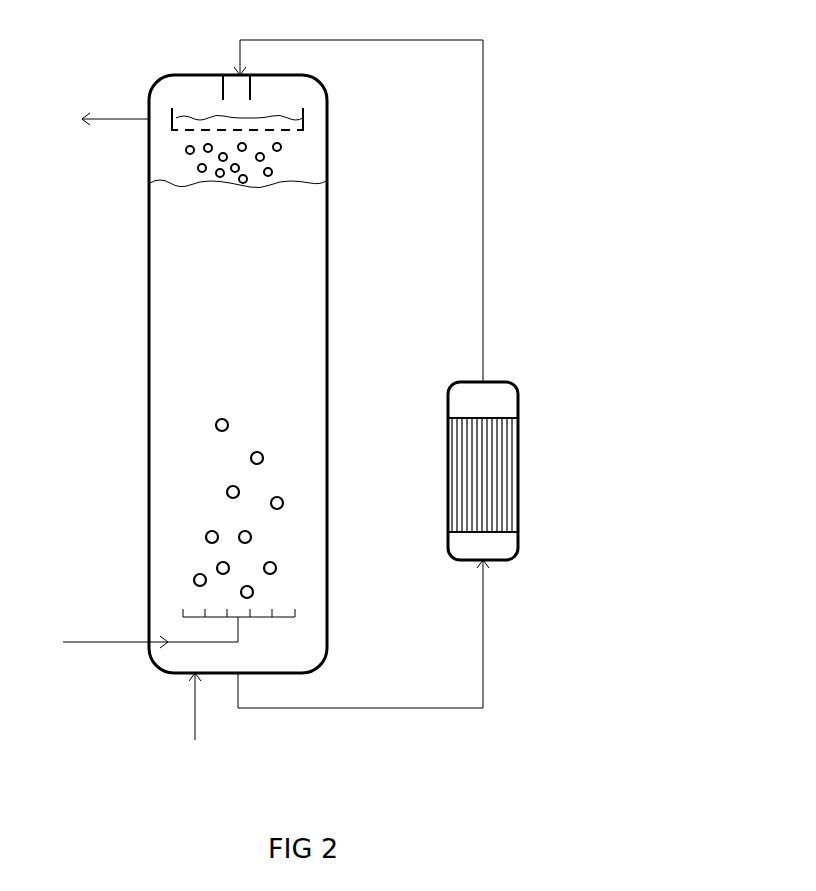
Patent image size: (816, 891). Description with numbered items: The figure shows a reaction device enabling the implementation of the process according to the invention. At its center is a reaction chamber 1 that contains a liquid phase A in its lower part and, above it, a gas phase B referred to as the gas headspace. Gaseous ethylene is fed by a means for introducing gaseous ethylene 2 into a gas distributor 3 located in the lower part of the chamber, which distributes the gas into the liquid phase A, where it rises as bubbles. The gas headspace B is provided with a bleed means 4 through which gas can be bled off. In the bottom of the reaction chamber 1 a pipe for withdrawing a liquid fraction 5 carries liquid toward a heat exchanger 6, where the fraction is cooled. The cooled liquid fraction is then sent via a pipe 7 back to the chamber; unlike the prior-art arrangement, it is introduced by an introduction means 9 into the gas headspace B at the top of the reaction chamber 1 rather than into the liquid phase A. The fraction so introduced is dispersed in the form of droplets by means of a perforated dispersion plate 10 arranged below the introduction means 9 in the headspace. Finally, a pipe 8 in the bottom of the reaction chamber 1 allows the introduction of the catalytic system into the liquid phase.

The reaction chamber 1 is at (149, 395).
The means for introducing gaseous ethylene 2 is at (95, 640).
The gas distributor 3 is at (185, 605).
The bleed means 4 is at (120, 117).
The pipe for withdrawing a liquid fraction 5 is at (430, 708).
The heat exchanger 6 is at (465, 380).
The pipe 7 is at (487, 267).
The pipe 8 is at (195, 703).
The introduction means 9 is at (228, 75).
The perforated dispersion plate 10 is at (172, 108).